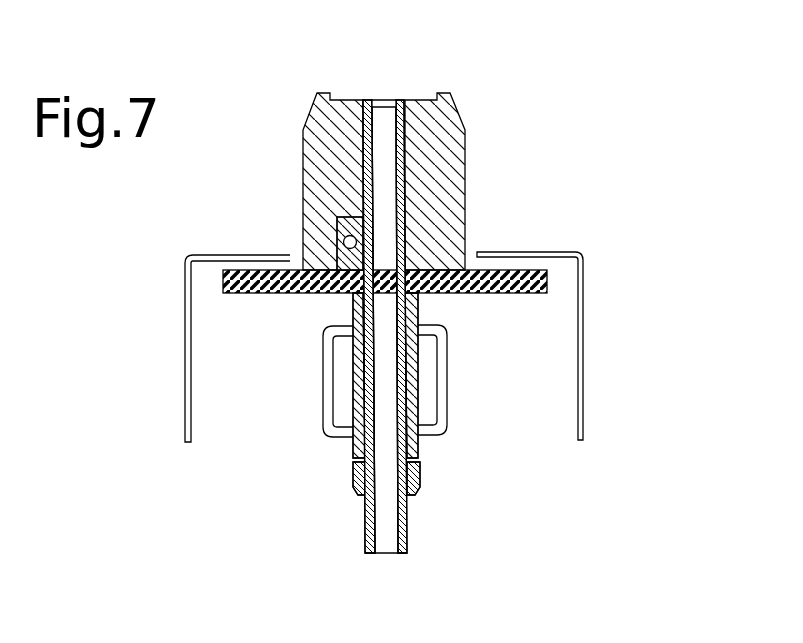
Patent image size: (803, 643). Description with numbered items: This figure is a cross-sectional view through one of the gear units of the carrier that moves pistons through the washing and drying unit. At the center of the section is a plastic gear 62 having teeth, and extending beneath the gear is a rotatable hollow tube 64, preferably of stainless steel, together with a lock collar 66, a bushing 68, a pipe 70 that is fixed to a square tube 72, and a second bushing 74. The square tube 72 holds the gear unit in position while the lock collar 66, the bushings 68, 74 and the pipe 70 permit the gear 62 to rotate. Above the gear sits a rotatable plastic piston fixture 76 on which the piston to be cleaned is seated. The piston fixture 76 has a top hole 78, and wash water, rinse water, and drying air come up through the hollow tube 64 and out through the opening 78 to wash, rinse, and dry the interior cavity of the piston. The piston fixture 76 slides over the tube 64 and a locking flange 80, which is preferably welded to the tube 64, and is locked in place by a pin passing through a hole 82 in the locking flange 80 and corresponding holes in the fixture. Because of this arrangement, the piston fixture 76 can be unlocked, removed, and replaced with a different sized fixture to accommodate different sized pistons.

The plastic gear 62 is at (547, 283).
The hollow tube 64 is at (408, 523).
The lock collar 66 is at (420, 478).
The bushing 68 is at (353, 463).
The pipe 70 is at (353, 450).
The square tube 72 is at (447, 432).
The bushing 74 is at (418, 295).
The piston fixture 76 is at (310, 119).
The top hole 78 is at (380, 100).
The locking flange 80 is at (336, 222).
The hole 82 is at (343, 238).